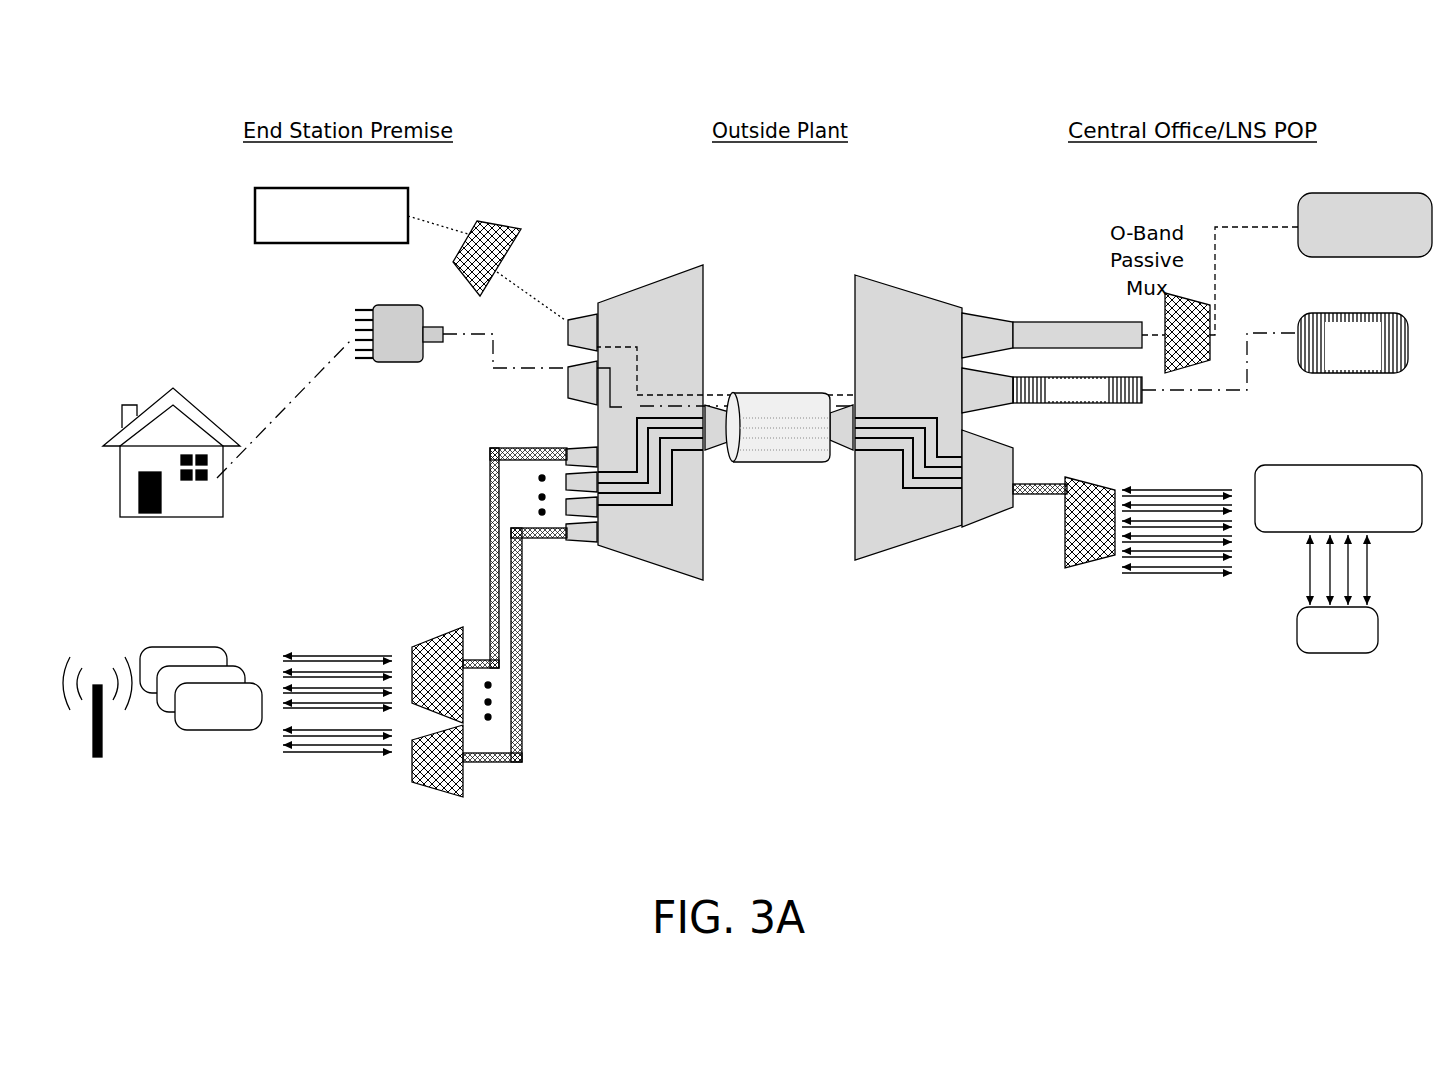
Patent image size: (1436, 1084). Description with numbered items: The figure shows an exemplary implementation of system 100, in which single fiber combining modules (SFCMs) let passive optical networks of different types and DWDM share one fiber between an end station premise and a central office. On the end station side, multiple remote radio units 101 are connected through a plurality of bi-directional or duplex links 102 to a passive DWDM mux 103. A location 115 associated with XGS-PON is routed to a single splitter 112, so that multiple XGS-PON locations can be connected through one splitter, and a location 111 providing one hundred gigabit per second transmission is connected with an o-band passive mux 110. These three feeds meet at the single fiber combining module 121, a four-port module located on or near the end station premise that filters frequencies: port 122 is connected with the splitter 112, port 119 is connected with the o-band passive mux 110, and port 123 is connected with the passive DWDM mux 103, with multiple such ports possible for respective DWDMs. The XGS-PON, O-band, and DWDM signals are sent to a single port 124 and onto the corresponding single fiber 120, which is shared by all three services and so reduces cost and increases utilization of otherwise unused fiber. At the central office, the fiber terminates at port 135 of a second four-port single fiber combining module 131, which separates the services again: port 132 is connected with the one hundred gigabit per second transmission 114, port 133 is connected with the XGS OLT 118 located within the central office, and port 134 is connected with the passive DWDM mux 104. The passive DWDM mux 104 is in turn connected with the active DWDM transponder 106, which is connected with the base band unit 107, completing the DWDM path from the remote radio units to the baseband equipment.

The system 100 is at (197, 90).
The remote radio units 101 is at (223, 730).
The links 102 is at (328, 830).
The passive DWDM mux 103 is at (438, 637).
The passive DWDM mux 104 is at (1090, 482).
The active DWDM transponder 106 is at (1283, 465).
The base band unit 107 is at (1378, 628).
The o-band passive mux 110 is at (502, 223).
The location 111 is at (277, 187).
The splitter 112 is at (400, 363).
The 100 Gbps transmission 114 is at (1317, 195).
The location 115 is at (195, 407).
The XGS OLT 118 is at (1317, 315).
The port 119 is at (580, 312).
The single fiber 120 is at (762, 463).
The single fiber combining module 121 is at (668, 275).
The port 122 is at (580, 373).
The port 123 is at (580, 447).
The single port 124 is at (712, 393).
The single fiber combining module 131 is at (885, 280).
The port 132 is at (990, 320).
The port 133 is at (987, 410).
The port 134 is at (982, 513).
The port 135 is at (847, 393).